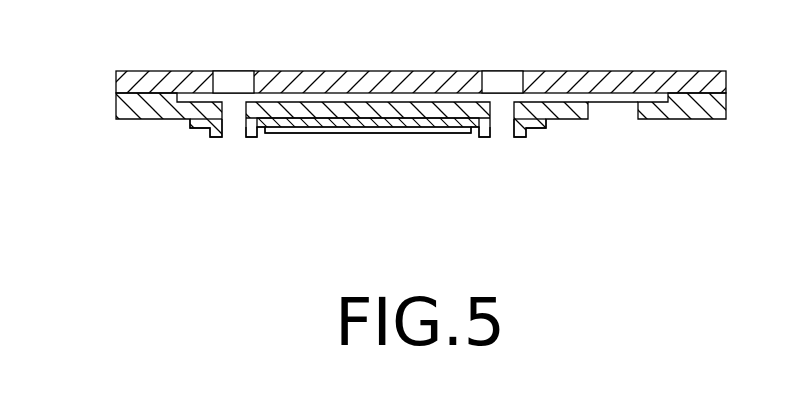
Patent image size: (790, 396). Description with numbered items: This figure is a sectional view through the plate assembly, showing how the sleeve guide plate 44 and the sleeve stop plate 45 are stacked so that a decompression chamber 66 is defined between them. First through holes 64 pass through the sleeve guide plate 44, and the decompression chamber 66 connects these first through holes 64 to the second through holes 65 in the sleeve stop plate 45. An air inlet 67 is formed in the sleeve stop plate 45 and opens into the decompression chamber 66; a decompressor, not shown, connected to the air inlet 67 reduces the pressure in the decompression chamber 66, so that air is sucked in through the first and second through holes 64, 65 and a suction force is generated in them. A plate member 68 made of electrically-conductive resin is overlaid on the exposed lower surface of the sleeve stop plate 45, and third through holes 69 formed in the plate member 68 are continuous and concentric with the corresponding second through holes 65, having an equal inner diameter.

The sleeve guide plate 44 is at (116, 84).
The sleeve stop plate 45 is at (116, 106).
The first through holes 64 is at (222, 73).
The second through holes 65 is at (222, 126).
The decompression chamber 66 is at (335, 104).
The air inlet 67 is at (628, 118).
The plate member 68 is at (315, 128).
The third through holes 69 is at (238, 137).